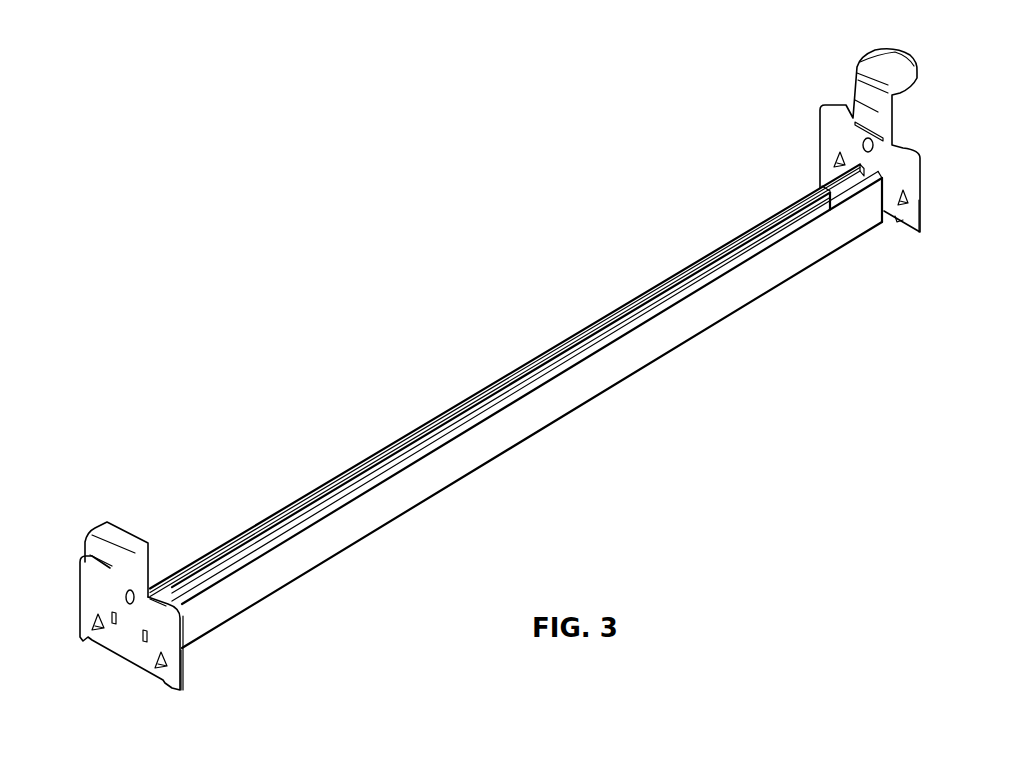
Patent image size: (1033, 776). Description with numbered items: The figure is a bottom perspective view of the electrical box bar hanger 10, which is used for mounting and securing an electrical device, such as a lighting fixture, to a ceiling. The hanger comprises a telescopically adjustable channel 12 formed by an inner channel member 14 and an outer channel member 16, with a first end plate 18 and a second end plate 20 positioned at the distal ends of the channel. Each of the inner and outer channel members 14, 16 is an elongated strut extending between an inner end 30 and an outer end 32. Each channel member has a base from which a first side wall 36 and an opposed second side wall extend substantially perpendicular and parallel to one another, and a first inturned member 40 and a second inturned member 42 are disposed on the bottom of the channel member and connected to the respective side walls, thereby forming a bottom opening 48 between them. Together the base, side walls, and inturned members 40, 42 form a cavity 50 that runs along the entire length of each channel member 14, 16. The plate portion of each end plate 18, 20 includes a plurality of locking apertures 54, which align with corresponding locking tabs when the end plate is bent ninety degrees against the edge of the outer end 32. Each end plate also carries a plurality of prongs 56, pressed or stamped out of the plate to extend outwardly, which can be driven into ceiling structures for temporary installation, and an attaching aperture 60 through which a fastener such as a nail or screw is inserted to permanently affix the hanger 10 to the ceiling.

The electrical box bar hanger 10 is at (377, 430).
The telescopically adjustable channel 12 is at (402, 546).
The inner channel member 14 is at (862, 212).
The outer channel member 16 is at (460, 472).
The first end plate 18 is at (845, 96).
The second end plate 20 is at (70, 545).
The inner end 30 is at (170, 590).
The outer end 32 is at (184, 650).
The first side wall 36 is at (609, 373).
The first inturned member 40 is at (697, 294).
The second inturned member 42 is at (684, 274).
The bottom opening 48 is at (490, 406).
The cavity 50 is at (582, 342).
The locking apertures 54 is at (112, 626).
The prongs 56 is at (90, 627).
The attaching aperture 60 is at (125, 595).